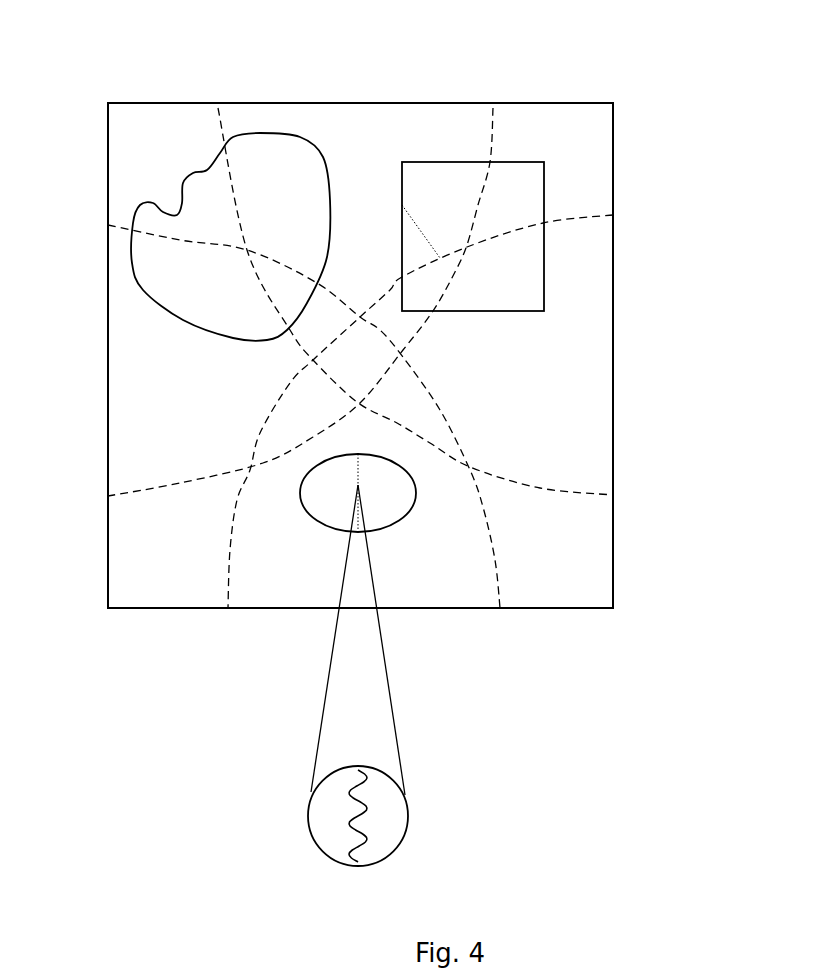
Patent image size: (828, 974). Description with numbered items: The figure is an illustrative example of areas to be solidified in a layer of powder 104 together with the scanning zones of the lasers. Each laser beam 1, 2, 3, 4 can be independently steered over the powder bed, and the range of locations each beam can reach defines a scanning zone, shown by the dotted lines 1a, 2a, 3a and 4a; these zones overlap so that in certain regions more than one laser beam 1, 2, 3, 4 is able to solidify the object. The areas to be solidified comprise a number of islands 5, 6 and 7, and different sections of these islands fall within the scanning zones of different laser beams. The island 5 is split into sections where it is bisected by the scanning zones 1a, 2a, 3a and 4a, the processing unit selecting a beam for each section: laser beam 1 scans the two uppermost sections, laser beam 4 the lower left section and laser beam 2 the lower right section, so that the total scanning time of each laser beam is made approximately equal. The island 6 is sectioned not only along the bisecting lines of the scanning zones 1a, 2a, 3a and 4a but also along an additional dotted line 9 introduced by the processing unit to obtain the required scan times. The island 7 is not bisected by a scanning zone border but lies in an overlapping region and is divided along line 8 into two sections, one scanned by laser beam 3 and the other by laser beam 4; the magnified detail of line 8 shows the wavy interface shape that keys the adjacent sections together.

The powder 104 is at (614, 161).
The scanning zone of laser beam 1 1a is at (496, 127).
The scanning zone of laser beam 2 2a is at (580, 493).
The scanning zone of laser beam 3 3a is at (225, 572).
The scanning zone of laser beam 4 4a is at (504, 587).
The island 5 is at (166, 201).
The island 6 is at (442, 160).
The island 7 is at (326, 527).
The dividing line 8 is at (373, 816).
The additional sectioning line 9 is at (419, 228).
The laser beam 1 is at (311, 248).
The laser beam 2 is at (399, 237).
The laser beam 3 is at (443, 388).
The laser beam 4 is at (269, 388).